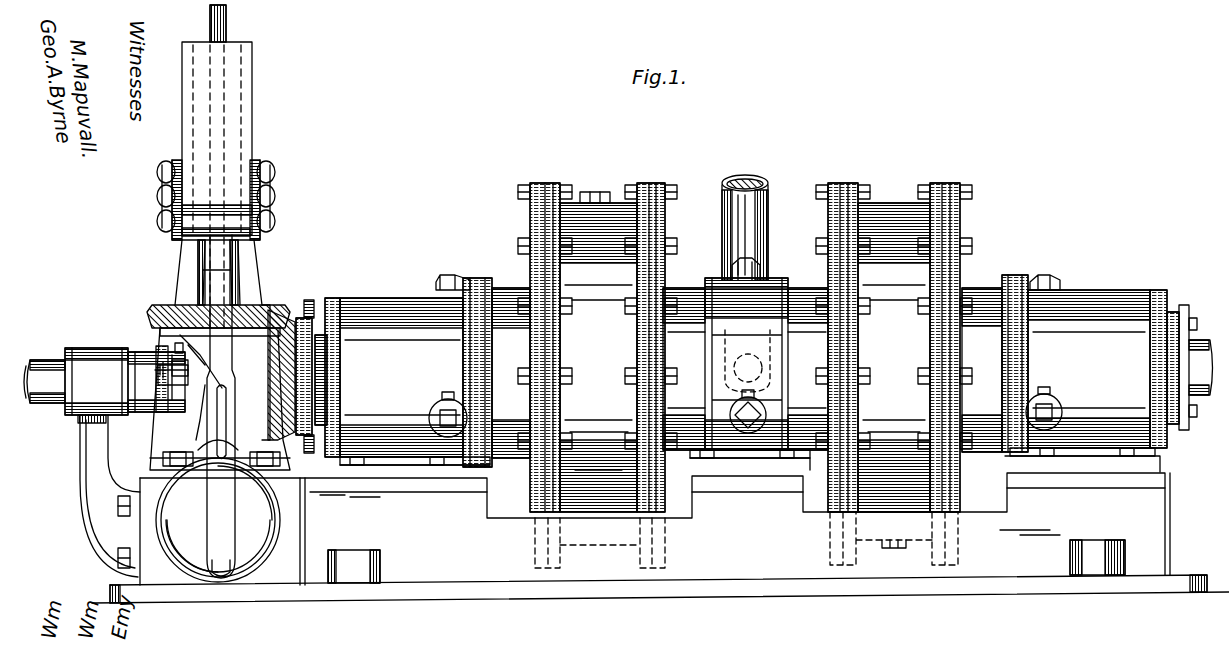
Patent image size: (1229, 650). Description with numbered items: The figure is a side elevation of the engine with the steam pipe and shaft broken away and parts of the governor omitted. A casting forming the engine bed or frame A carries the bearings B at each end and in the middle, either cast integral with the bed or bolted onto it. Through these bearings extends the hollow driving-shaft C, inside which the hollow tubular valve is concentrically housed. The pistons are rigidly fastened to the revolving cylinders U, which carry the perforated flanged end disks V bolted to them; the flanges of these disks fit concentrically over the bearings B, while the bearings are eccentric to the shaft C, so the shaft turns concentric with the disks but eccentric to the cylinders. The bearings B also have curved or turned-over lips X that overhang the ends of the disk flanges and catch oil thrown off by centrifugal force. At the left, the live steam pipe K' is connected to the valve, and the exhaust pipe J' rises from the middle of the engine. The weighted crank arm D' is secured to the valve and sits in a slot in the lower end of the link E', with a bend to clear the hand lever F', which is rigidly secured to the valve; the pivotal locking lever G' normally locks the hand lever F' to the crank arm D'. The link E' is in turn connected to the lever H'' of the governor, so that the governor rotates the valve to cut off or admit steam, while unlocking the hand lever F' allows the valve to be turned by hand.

The engine bed or frame A is at (695, 595).
The bearings B is at (372, 305).
The hollow driving-shaft C is at (1200, 357).
The live steam pipe K' is at (44, 358).
The weighted crank arm D' is at (152, 361).
The pivotal locking lever G' is at (96, 385).
The lock hand lever F' is at (190, 387).
The link E' is at (226, 305).
The lever H'' is at (236, 167).
The curved or turned-over lips X is at (504, 257).
The perforated flanged end disks V is at (532, 215).
The revolving cylinders U is at (610, 202).
The exhaust pipe J' is at (754, 214).